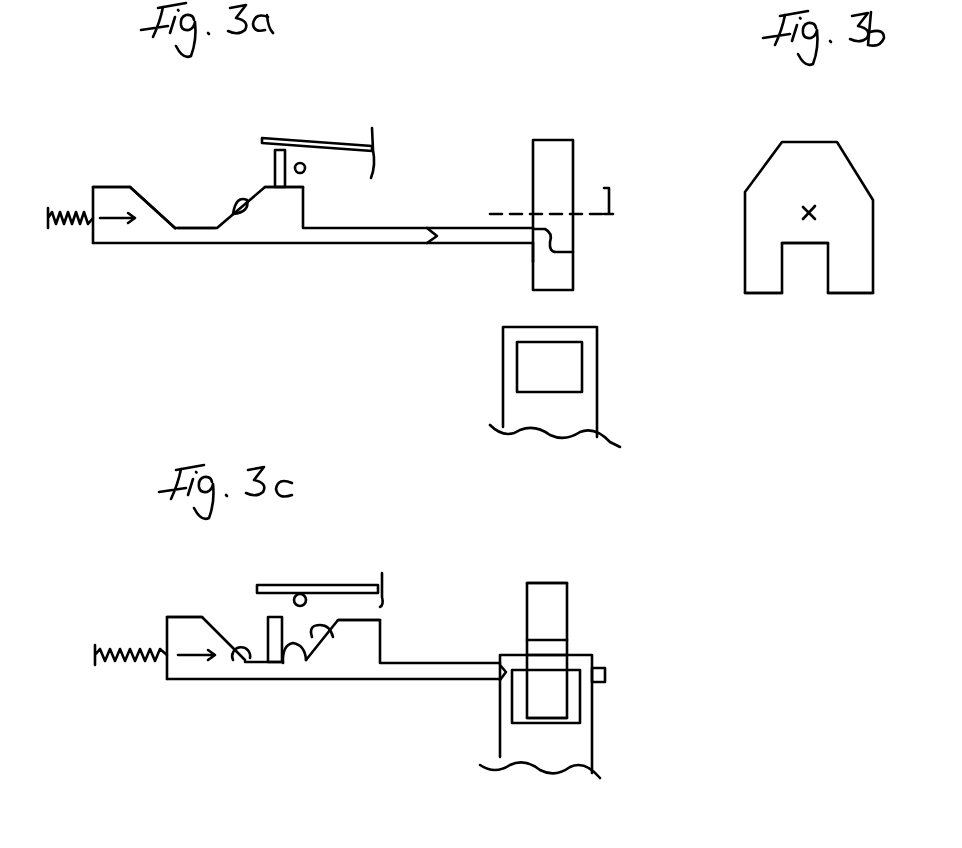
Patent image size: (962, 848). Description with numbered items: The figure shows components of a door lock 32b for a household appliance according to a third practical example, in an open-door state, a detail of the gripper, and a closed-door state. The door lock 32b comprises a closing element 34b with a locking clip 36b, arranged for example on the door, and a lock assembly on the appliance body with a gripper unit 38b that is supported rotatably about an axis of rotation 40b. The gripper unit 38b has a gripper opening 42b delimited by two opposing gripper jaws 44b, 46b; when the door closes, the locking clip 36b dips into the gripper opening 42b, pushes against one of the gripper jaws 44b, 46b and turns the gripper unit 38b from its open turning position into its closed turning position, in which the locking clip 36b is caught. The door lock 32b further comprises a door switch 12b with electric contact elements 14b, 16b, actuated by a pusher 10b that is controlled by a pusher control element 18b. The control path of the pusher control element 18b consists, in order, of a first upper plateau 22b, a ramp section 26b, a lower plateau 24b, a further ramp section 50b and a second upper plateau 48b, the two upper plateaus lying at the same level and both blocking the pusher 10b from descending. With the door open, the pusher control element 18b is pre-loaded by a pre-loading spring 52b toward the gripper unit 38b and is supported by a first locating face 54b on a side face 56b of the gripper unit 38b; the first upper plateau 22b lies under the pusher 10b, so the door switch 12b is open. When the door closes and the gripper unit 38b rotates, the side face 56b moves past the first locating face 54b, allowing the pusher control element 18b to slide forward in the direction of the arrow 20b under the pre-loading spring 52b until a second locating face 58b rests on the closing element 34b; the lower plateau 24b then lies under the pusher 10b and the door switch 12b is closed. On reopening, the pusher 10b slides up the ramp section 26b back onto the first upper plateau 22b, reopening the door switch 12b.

In FIG. 3A, the pusher 10b is at (180, 182).
In FIG. 3C, the pusher 10b is at (192, 612).
In FIG. 3A, the door switch 12b is at (331, 108).
In FIG. 3C, the door switch 12b is at (348, 574).
In FIG. 3A, the electric contact element 14b is at (302, 100).
In FIG. 3C, the electric contact element 14b is at (295, 555).
In FIG. 3A, the electric contact element 16b is at (354, 134).
In FIG. 3C, the electric contact element 16b is at (355, 566).
In FIG. 3A, the pusher control element 18b is at (313, 262).
In FIG. 3C, the pusher control element 18b is at (333, 701).
In FIG. 3A, the arrow 20b is at (106, 276).
In FIG. 3C, the arrow 20b is at (207, 731).
In FIG. 3A, the first upper plateau 22b is at (317, 199).
In FIG. 3C, the first upper plateau 22b is at (416, 613).
In FIG. 3A, the lower plateau 24b is at (201, 196).
In FIG. 3C, the lower plateau 24b is at (347, 720).
In FIG. 3A, the ramp section 26b is at (199, 251).
In FIG. 3C, the ramp section 26b is at (378, 676).
In FIG. 3A, the door lock 32b is at (484, 48).
In FIG. 3C, the door lock 32b is at (527, 493).
In FIG. 3A, the closing element 34b is at (591, 422).
In FIG. 3C, the closing element 34b is at (578, 759).
In FIG. 3A, the locking clip 36b is at (591, 364).
In FIG. 3C, the locking clip 36b is at (630, 666).
In FIG. 3A, the gripper unit 38b is at (603, 181).
In FIG. 3B, the gripper unit 38b is at (809, 186).
In FIG. 3C, the gripper unit 38b is at (568, 610).
In FIG. 3A, the axis of rotation 40b is at (586, 184).
In FIG. 3B, the axis of rotation 40b is at (860, 160).
In FIG. 3B, the gripper opening 42b is at (816, 300).
In FIG. 3C, the gripper opening 42b is at (590, 603).
In FIG. 3B, the gripper jaw 44b is at (765, 336).
In FIG. 3C, the gripper jaw 44b is at (564, 773).
In FIG. 3B, the gripper jaw 46b is at (883, 303).
In FIG. 3C, the gripper jaw 46b is at (611, 557).
In FIG. 3A, the second upper plateau 48b is at (81, 140).
In FIG. 3C, the second upper plateau 48b is at (117, 589).
In FIG. 3A, the ramp section 50b is at (138, 150).
In FIG. 3C, the ramp section 50b is at (254, 705).
In FIG. 3A, the pre-loading spring 52b is at (55, 279).
In FIG. 3C, the pre-loading spring 52b is at (131, 694).
In FIG. 3A, the first locating face 54b is at (602, 245).
In FIG. 3C, the first locating face 54b is at (663, 657).
In FIG. 3A, the side face 56b is at (475, 273).
In FIG. 3A, the second locating face 58b is at (469, 196).
In FIG. 3C, the second locating face 58b is at (464, 734).